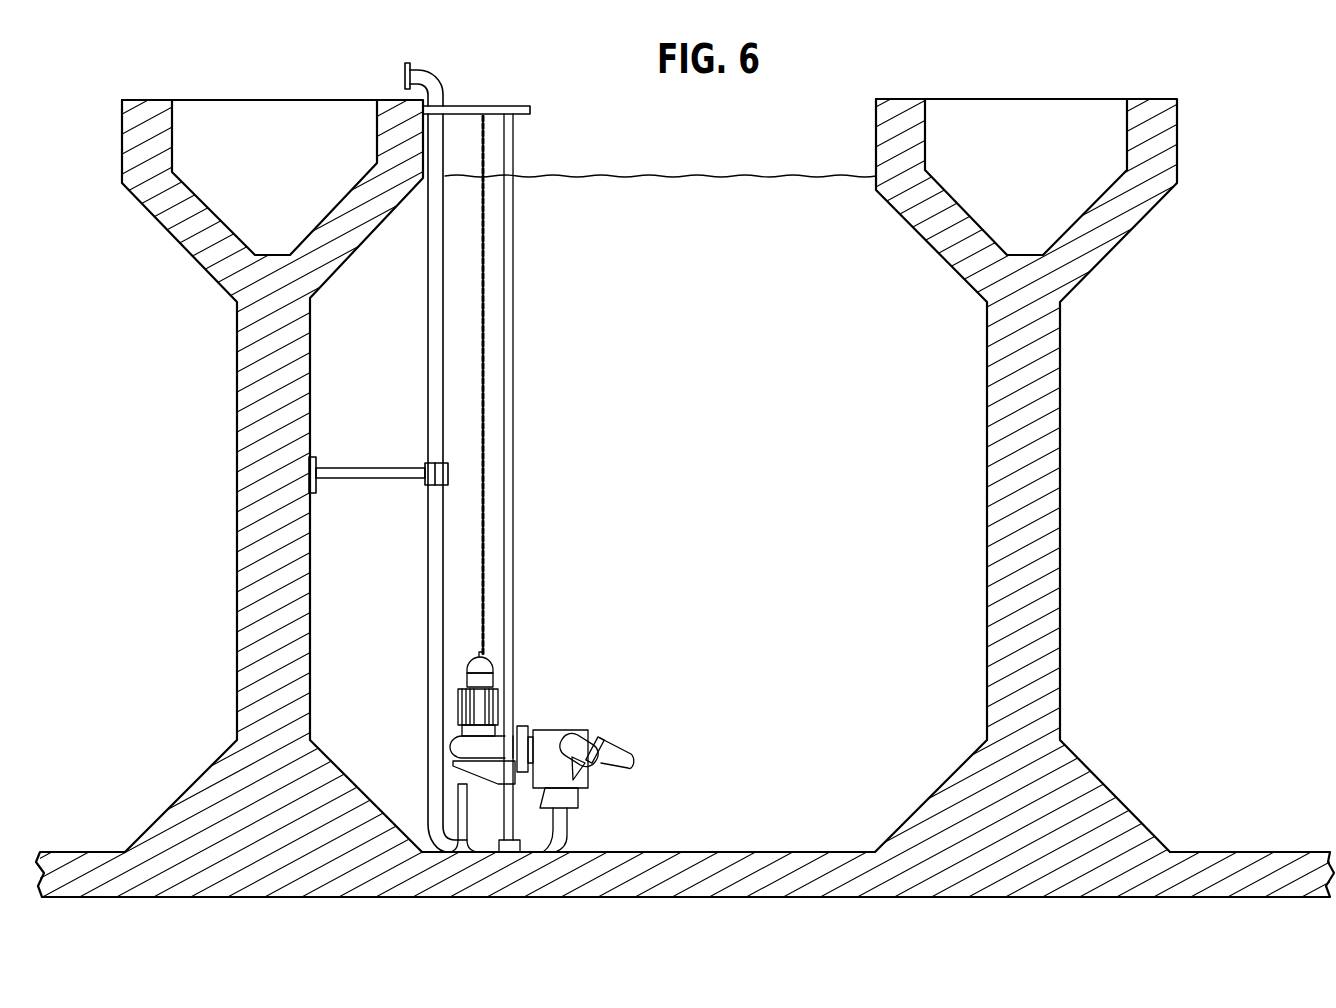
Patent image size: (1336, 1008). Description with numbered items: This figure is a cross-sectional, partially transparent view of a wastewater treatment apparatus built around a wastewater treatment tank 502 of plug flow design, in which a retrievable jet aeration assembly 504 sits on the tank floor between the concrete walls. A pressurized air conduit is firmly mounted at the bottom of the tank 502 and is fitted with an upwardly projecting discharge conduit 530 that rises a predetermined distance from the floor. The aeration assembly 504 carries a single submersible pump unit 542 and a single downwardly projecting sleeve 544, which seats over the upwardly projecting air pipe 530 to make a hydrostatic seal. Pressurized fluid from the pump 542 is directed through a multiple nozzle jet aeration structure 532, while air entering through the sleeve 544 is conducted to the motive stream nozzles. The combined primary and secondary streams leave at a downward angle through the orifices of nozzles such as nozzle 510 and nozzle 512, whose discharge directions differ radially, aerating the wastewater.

The wastewater treatment tank 502 is at (712, 860).
The retrievable jet aeration assembly 504 is at (537, 731).
The discharge nozzle element 510 is at (568, 735).
The discharge nozzle element 512 is at (616, 756).
The upwardly projecting discharge conduit 530 is at (567, 819).
The multiple nozzle jet aeration structure 532 is at (583, 732).
The submersible pump unit 542 is at (452, 747).
The downwardly projecting sleeve 544 is at (570, 800).